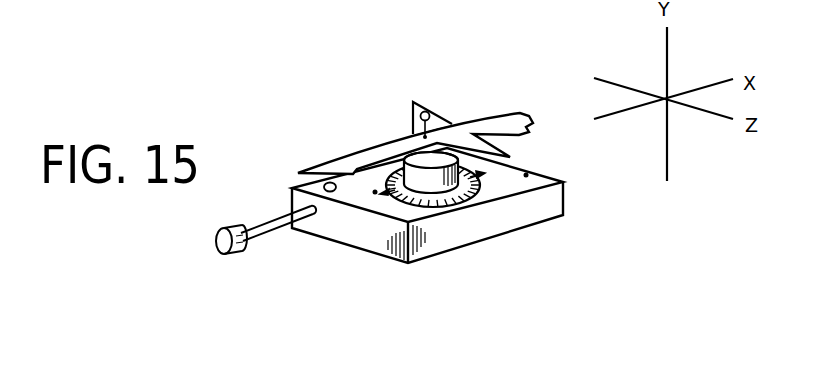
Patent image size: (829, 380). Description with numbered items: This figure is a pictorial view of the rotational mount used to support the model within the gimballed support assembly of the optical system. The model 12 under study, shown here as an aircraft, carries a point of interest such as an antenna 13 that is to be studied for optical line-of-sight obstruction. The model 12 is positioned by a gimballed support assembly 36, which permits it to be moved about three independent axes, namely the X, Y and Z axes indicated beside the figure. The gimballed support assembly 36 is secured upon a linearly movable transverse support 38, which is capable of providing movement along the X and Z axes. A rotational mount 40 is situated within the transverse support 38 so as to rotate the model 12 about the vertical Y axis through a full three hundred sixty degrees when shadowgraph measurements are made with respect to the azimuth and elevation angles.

The model 12 is at (366, 126).
The antenna 13 is at (436, 112).
The gimballed support assembly 36 is at (419, 185).
The transverse support 38 is at (527, 230).
The rotational mount 40 is at (422, 198).